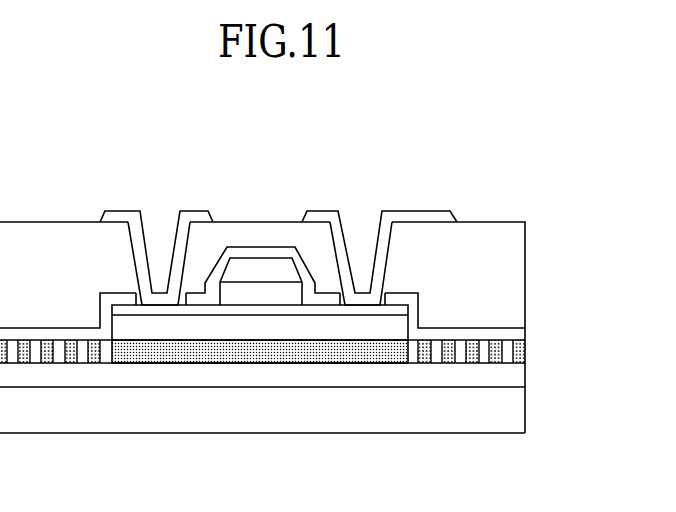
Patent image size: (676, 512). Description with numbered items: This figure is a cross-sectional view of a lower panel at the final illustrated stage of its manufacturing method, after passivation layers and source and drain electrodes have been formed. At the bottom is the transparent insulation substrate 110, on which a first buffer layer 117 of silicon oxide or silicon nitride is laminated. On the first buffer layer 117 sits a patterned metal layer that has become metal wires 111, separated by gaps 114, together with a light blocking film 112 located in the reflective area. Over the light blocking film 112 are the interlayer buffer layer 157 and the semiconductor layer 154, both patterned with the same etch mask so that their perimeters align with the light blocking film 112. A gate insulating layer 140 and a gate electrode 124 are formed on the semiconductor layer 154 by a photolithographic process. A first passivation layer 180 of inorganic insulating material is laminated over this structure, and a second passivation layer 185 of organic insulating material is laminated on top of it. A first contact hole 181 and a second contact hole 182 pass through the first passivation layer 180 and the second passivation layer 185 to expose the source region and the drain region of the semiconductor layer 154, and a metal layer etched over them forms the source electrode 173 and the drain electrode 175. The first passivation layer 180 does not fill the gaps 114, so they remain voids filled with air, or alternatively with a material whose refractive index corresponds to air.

The transparent insulation substrate 110 is at (515, 410).
The metal wires 111 is at (425, 362).
The light blocking film 112 is at (292, 357).
The gaps 114 is at (483, 358).
The first buffer layer 117 is at (515, 375).
The gate electrode 124 is at (262, 268).
The gate insulating layer 140 is at (233, 297).
The semiconductor layer 154 is at (335, 310).
The interlayer buffer layer 157 is at (165, 330).
The source electrode 173 is at (120, 216).
The drain electrode 175 is at (323, 214).
The first passivation layer 180 is at (515, 332).
The first contact hole 181 is at (183, 248).
The second contact hole 182 is at (386, 248).
The second passivation layer 185 is at (515, 272).